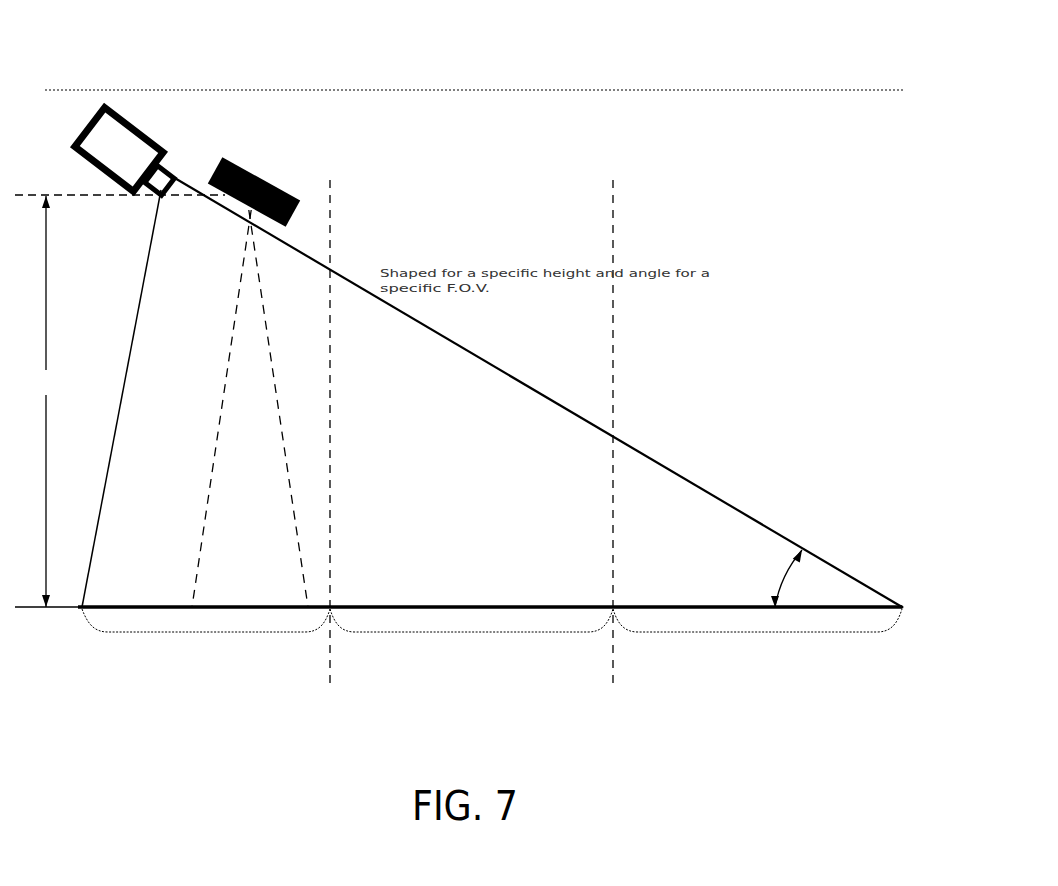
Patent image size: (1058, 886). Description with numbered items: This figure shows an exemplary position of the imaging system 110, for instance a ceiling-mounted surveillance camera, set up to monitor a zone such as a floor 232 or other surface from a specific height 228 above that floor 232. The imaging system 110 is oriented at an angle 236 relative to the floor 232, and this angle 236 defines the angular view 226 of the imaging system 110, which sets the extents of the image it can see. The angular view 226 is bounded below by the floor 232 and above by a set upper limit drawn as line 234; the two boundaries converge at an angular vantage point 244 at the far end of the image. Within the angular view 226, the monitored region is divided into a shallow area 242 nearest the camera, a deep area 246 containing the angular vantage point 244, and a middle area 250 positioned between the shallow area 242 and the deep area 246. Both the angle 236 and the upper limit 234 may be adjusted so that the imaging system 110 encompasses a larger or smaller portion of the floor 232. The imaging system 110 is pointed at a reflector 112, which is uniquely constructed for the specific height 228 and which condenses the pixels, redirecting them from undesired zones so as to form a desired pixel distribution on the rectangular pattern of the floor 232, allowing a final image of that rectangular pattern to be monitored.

The imaging system 110 is at (134, 85).
The reflector 112 is at (257, 173).
The angular view 226 is at (400, 451).
The specific height 228 is at (57, 401).
The floor 232 is at (658, 606).
The upper limit line 234 is at (700, 487).
The angle 236 is at (765, 578).
The shallow area 242 is at (208, 632).
The angular vantage point 244 is at (906, 583).
The deep area 246 is at (755, 632).
The middle area 250 is at (471, 632).